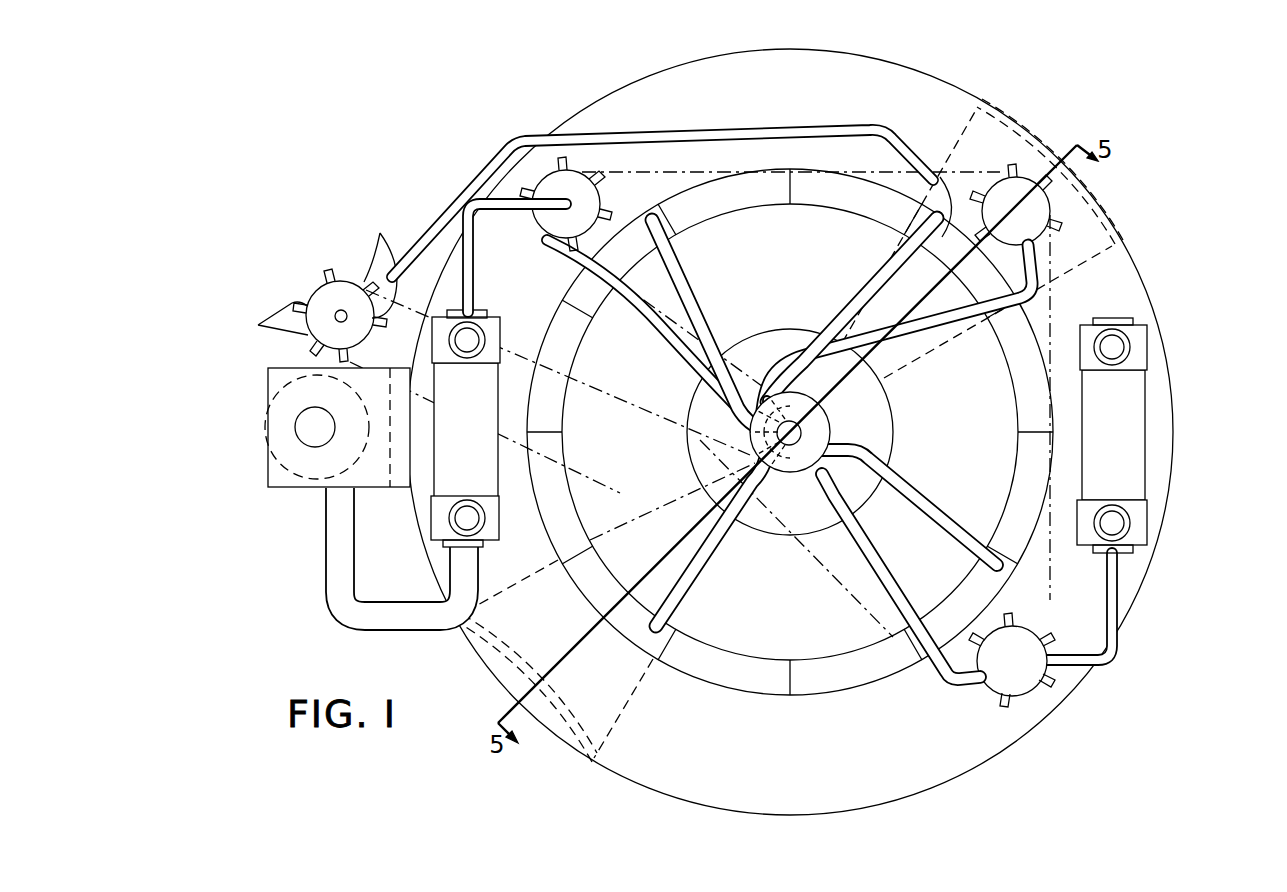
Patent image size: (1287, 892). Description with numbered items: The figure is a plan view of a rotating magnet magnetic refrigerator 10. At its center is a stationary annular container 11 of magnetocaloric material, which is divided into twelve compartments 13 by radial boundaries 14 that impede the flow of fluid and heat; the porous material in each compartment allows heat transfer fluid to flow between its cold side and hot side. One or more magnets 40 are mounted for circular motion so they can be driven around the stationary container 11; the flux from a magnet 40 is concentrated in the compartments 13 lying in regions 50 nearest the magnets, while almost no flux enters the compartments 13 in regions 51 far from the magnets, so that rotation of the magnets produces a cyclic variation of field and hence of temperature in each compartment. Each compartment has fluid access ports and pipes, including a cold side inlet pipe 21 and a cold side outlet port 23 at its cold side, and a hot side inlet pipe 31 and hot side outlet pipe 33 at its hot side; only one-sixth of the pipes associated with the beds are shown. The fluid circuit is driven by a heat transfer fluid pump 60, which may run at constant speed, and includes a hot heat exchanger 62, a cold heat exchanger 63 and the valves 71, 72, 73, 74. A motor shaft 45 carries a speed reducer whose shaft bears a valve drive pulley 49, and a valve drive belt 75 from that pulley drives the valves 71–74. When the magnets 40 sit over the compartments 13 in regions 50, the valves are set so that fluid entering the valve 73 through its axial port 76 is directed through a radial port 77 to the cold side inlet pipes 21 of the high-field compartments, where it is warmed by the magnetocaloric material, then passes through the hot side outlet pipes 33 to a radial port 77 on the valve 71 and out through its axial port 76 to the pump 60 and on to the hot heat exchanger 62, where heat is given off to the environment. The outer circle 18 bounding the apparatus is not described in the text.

The rotating magnet refrigerator 10 is at (1153, 688).
The stationary annular container 11 is at (868, 683).
The compartments 13 is at (703, 667).
The radial boundaries 14 is at (787, 693).
The outer housing circle 18 is at (1173, 402).
The cold side inlet pipe 21 is at (477, 213).
The cold side outlet port 23 is at (958, 685).
The hot side inlet pipe 31 is at (1035, 262).
The hot side outlet pipe 33 is at (850, 125).
The magnet 40 is at (990, 130).
The motor shaft 45 is at (787, 423).
The valve drive pulley 49 is at (786, 420).
The regions nearest the magnets 50 is at (942, 240).
The regions far from the magnets 51 is at (633, 233).
The heat transfer fluid pump 60 is at (287, 430).
The hot heat exchanger 62 is at (443, 475).
The cold heat exchanger 63 is at (1130, 460).
The valve 71 is at (325, 297).
The valve 72 is at (550, 173).
The valve 73 is at (1017, 187).
The valve 74 is at (1023, 687).
The valve drive belt 75 is at (663, 170).
The axial port 76 is at (562, 203).
The radial port 77 is at (262, 325).